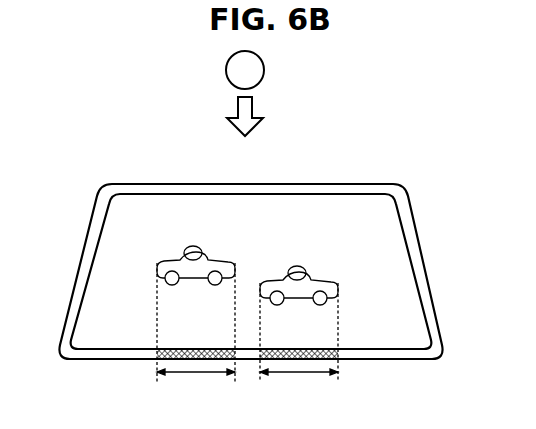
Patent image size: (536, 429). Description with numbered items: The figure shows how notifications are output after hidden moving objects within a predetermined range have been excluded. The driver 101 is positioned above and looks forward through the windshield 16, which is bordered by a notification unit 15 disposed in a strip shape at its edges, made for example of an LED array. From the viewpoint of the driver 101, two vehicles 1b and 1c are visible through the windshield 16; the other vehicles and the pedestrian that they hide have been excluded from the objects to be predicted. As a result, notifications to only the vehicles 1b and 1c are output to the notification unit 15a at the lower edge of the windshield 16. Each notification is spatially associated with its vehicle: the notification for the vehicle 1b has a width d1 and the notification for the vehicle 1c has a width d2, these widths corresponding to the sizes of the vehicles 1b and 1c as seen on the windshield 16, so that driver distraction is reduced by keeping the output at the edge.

The notification unit 15 is at (378, 169).
The windshield 16 is at (147, 220).
The notification unit at the lower edge of the windshield 15a is at (95, 361).
The vehicle 1c is at (214, 260).
The vehicle 1b is at (326, 280).
The driver 101 is at (264, 67).
The width d1 is at (299, 387).
The width d2 is at (196, 387).